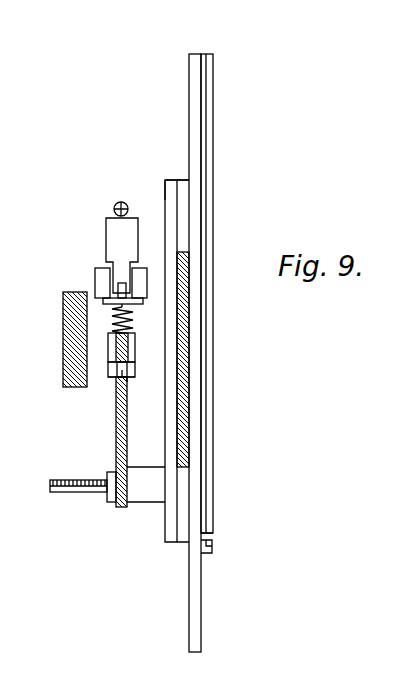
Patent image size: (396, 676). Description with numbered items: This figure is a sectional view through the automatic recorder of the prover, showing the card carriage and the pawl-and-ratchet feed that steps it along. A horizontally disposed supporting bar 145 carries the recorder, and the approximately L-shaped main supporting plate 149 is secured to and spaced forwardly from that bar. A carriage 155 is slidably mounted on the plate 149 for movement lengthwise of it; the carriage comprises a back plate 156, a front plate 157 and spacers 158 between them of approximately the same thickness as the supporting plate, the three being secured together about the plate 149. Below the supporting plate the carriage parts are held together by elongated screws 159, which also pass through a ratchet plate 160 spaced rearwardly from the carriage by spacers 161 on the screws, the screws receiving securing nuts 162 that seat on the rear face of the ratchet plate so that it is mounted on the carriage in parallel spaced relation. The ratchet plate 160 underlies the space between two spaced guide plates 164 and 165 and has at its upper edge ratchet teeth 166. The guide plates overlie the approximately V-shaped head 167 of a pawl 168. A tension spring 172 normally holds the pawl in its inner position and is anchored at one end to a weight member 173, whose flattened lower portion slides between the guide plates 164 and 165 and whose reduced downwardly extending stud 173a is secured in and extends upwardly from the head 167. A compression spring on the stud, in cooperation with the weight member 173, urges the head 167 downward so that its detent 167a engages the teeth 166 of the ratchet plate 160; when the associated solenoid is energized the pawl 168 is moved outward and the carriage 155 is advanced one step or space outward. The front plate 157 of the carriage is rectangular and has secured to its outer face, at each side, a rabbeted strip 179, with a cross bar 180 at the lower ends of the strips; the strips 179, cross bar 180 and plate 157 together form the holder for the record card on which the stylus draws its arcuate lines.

The supporting bar 145 is at (63, 325).
The main supporting plate 149 is at (190, 383).
The carriage 155 is at (157, 187).
The back plate 156 is at (172, 182).
The front plate 157 is at (193, 66).
The spacers 158 is at (183, 192).
The elongated screws 159 is at (55, 493).
The ratchet plate 160 is at (116, 442).
The spacers 161 is at (142, 502).
The securing nuts 162 is at (108, 503).
The guide plate 164 is at (140, 276).
The guide plate 165 is at (102, 271).
The ratchet teeth 166 is at (112, 381).
The head 167 is at (112, 371).
The detent 167a is at (117, 396).
The pawl 168 is at (110, 347).
The tension spring 172 is at (117, 203).
The weight member 173 is at (113, 230).
The stud 173a is at (120, 295).
The rabbeted strip 179 is at (208, 85).
The cross bar 180 is at (210, 553).